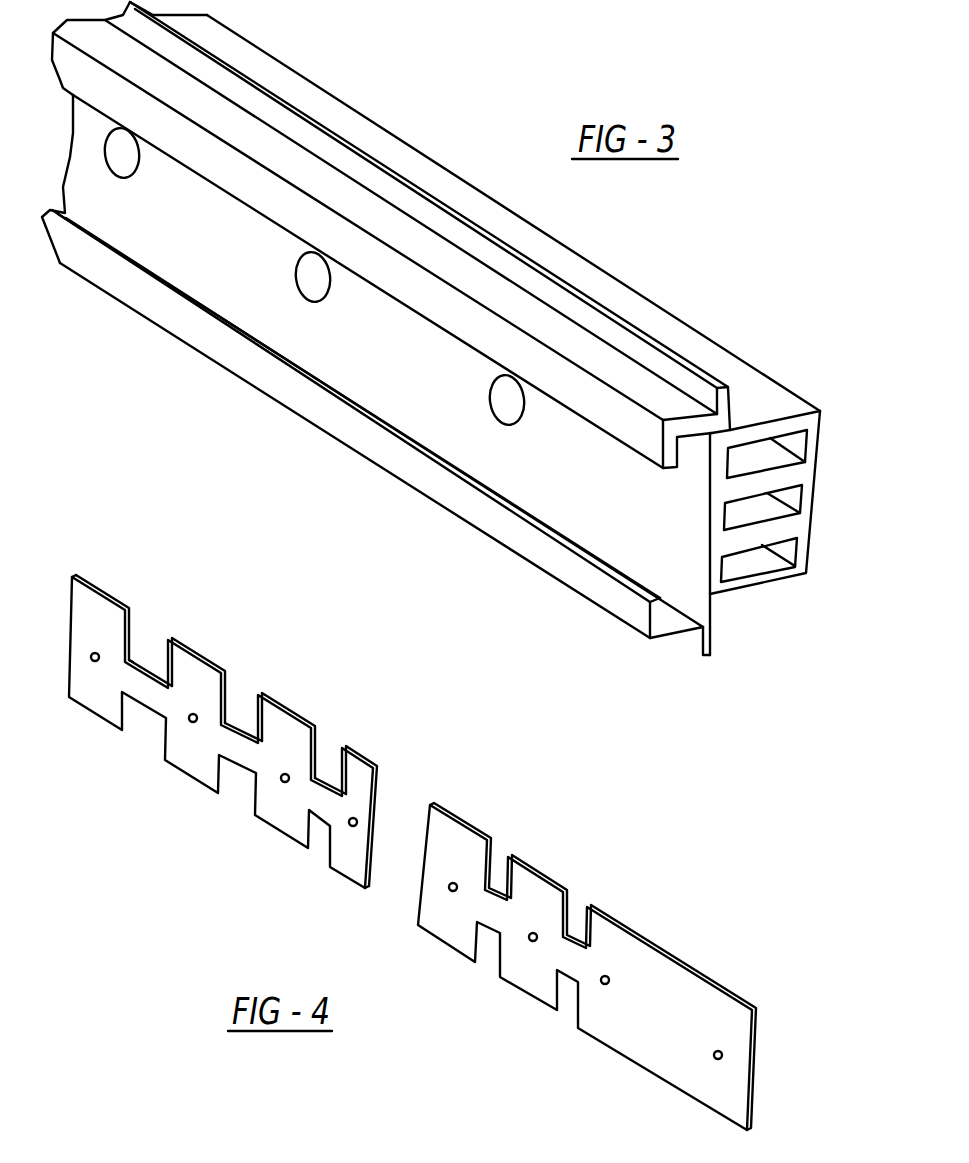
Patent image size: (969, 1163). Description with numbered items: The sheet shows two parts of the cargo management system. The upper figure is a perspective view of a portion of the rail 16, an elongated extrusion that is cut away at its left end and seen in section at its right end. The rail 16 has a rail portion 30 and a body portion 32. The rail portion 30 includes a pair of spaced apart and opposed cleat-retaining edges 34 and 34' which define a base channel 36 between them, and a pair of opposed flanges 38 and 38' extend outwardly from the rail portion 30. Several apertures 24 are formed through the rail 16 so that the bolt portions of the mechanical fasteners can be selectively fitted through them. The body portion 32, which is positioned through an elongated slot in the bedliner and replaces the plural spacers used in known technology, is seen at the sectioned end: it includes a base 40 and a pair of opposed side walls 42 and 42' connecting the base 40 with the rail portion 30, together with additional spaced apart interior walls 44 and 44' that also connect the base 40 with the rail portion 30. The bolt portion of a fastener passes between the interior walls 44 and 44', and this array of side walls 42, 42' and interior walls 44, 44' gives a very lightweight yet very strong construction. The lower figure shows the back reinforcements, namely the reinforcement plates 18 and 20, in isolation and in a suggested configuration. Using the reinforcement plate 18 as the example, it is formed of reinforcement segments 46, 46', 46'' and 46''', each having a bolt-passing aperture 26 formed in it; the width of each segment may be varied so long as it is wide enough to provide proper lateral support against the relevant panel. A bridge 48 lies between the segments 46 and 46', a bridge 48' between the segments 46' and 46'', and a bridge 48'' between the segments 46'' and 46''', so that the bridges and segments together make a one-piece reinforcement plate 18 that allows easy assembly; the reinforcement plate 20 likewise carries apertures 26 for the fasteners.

In FIG. 3, the rail 16 is at (563, 475).
In FIG. 3, the base channel 36 is at (413, 360).
In FIG. 3, the apertures 24 is at (313, 277).
In FIG. 3, the cleat-retaining edge 34' is at (385, 218).
In FIG. 3, the flange 38' is at (436, 216).
In FIG. 3, the body portion 32 is at (735, 330).
In FIG. 3, the cleat-retaining edge 34 is at (356, 406).
In FIG. 3, the rail portion 30 is at (580, 580).
In FIG. 3, the flange 38 is at (672, 675).
In FIG. 3, the base 40 is at (807, 507).
In FIG. 3, the side wall 42' is at (772, 380).
In FIG. 3, the interior wall 44' is at (795, 412).
In FIG. 3, the interior wall 44 is at (763, 592).
In FIG. 3, the side wall 42 is at (765, 605).
In FIG. 4, the reinforcement plate 18 is at (80, 615).
In FIG. 4, the reinforcement segment 46 is at (125, 599).
In FIG. 4, the reinforcement segment 46' is at (222, 660).
In FIG. 4, the reinforcement segment 46'' is at (314, 714).
In FIG. 4, the reinforcement segment 46''' is at (400, 788).
In FIG. 4, the bridge 48 is at (150, 745).
In FIG. 4, the bridge 48' is at (224, 793).
In FIG. 4, the bridge 48'' is at (327, 862).
In FIG. 4, the reinforcement plate 20 is at (702, 1007).
In FIG. 4, the apertures 26 is at (95, 663).